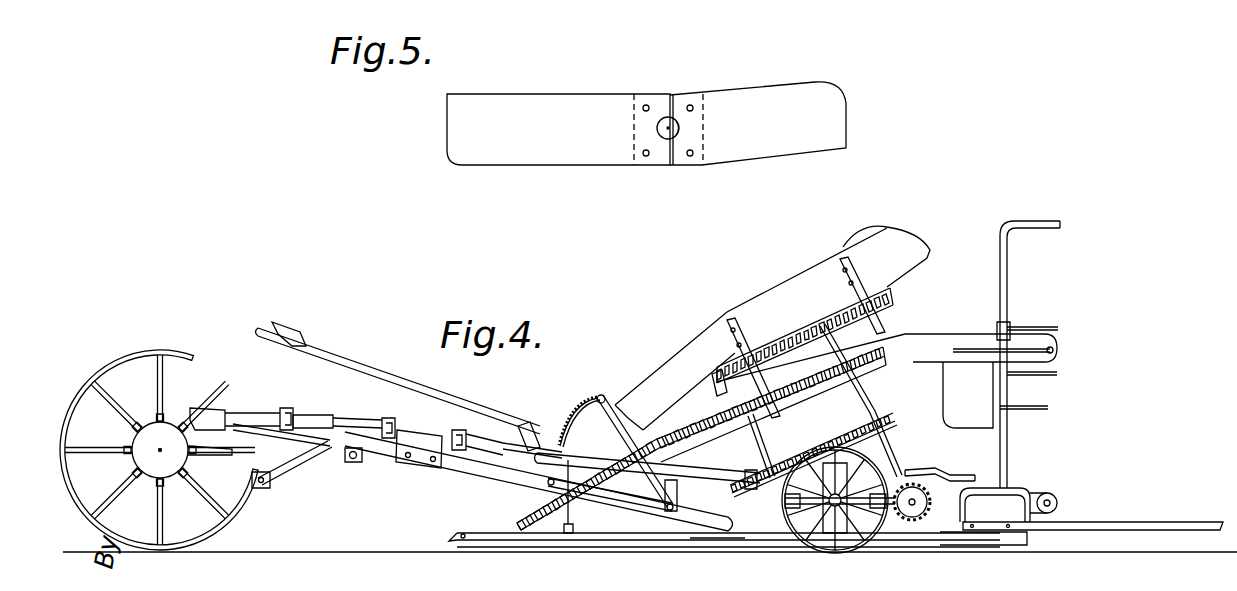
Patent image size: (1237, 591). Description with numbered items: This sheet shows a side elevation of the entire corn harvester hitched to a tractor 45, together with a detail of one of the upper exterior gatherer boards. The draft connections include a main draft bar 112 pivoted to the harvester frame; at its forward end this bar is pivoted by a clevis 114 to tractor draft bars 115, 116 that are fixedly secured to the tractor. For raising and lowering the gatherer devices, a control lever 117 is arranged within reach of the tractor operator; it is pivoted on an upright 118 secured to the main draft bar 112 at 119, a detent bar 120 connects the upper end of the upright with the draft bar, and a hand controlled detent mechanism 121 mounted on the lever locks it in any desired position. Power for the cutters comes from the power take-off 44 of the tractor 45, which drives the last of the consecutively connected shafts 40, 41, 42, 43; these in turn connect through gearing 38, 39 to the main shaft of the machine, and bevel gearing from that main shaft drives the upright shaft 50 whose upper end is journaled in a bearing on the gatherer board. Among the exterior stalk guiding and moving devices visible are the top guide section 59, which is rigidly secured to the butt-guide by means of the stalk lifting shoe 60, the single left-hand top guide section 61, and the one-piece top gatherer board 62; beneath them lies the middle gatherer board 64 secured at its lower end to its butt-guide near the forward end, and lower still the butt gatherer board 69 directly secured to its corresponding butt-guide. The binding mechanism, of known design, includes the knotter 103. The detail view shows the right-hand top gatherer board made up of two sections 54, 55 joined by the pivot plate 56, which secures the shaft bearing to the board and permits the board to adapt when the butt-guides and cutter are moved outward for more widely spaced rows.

In FIG. 5, the top gatherer board section 54 is at (530, 155).
In FIG. 5, the top gatherer board section 55 is at (830, 125).
In FIG. 5, the pivot plate 56 is at (672, 165).
In FIG. 4, the tractor 45 is at (118, 352).
In FIG. 4, the power take-off 44 is at (215, 412).
In FIG. 4, the shaft 43 is at (355, 425).
In FIG. 4, the shaft 42 is at (402, 432).
In FIG. 4, the hand controlled detent mechanism 121 is at (345, 318).
In FIG. 4, the control lever 117 is at (270, 335).
In FIG. 4, the tractor draft bar 116 is at (286, 432).
In FIG. 4, the tractor draft bar 115 is at (310, 475).
In FIG. 4, the clevis 114 is at (350, 457).
In FIG. 4, the main draft bar 112 is at (460, 472).
In FIG. 4, the stalk lifting shoe 60 is at (460, 532).
In FIG. 4, the upright 118 is at (664, 466).
In FIG. 4, the detent bar 120 is at (572, 430).
In FIG. 4, the shaft 41 is at (752, 478).
In FIG. 4, the top guide section 59 is at (650, 380).
In FIG. 4, the top guide section 61 is at (798, 275).
In FIG. 4, the top gatherer board 62 is at (878, 300).
In FIG. 4, the middle gatherer board 64 is at (760, 402).
In FIG. 4, the butt gatherer board 69 is at (886, 424).
In FIG. 4, the upright shaft 50 is at (848, 380).
In FIG. 4, the knotter 103 is at (992, 338).
In FIG. 4, the shaft 40 is at (860, 540).
In FIG. 4, the gearing 39 is at (882, 545).
In FIG. 4, the gearing 38 is at (915, 512).
In FIG. 4, the attachment point 119 is at (705, 538).